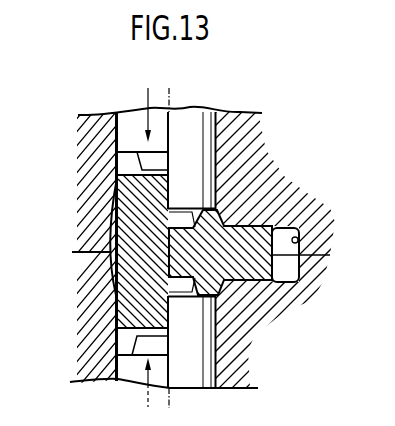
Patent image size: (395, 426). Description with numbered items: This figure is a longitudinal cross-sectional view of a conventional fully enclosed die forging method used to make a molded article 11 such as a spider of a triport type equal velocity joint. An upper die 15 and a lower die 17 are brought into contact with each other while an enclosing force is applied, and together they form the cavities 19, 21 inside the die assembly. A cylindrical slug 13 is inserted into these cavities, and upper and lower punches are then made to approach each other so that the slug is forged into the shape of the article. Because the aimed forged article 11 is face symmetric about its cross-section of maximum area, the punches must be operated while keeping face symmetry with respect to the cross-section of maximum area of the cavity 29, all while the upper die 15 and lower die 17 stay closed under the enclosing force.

The molded article 11 is at (263, 226).
The cylindrical slug 13 is at (118, 214).
The upper die 15 is at (89, 150).
The lower die 17 is at (85, 313).
The cavity 19 is at (108, 222).
The cavity 21 is at (110, 267).
The cavity 29 is at (298, 240).